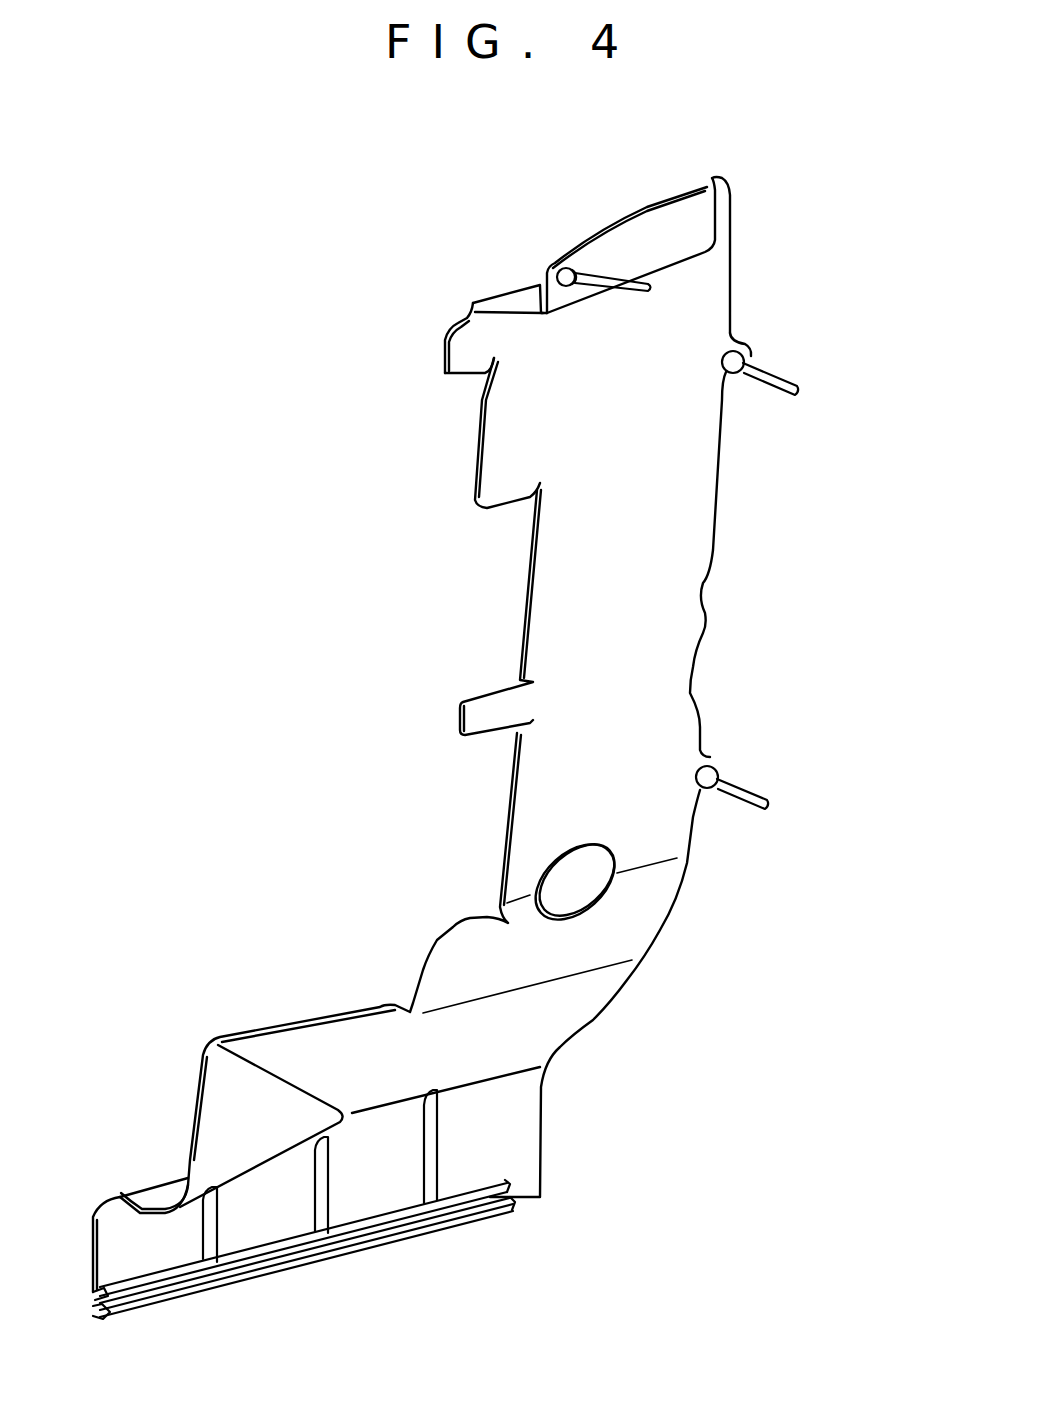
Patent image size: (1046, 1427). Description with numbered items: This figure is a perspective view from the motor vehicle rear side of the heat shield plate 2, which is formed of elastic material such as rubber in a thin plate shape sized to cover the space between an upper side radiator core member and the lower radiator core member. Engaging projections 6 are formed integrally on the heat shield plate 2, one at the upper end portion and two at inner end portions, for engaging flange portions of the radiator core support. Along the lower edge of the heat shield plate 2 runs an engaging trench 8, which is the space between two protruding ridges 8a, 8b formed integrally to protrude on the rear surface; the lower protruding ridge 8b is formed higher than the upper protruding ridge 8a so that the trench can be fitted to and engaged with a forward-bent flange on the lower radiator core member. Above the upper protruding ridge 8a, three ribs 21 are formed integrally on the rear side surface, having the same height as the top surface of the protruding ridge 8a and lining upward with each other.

The heat shield plate 2 is at (500, 602).
The engaging projection 6 is at (609, 252).
The engaging trench 8 is at (128, 1296).
The protruding ridge 8a is at (491, 1180).
The protruding ridge 8b is at (503, 1205).
The rib 21 is at (218, 1246).